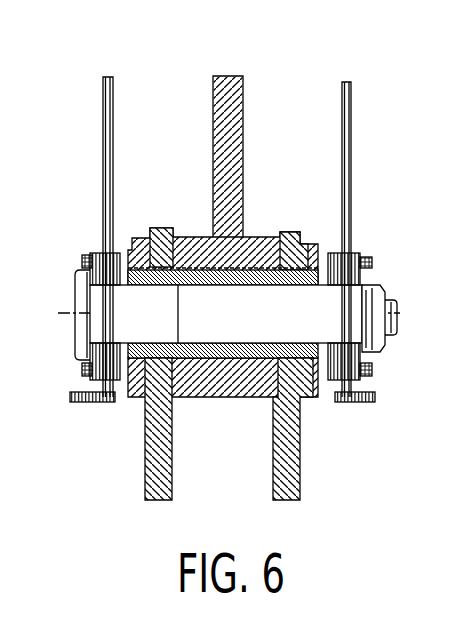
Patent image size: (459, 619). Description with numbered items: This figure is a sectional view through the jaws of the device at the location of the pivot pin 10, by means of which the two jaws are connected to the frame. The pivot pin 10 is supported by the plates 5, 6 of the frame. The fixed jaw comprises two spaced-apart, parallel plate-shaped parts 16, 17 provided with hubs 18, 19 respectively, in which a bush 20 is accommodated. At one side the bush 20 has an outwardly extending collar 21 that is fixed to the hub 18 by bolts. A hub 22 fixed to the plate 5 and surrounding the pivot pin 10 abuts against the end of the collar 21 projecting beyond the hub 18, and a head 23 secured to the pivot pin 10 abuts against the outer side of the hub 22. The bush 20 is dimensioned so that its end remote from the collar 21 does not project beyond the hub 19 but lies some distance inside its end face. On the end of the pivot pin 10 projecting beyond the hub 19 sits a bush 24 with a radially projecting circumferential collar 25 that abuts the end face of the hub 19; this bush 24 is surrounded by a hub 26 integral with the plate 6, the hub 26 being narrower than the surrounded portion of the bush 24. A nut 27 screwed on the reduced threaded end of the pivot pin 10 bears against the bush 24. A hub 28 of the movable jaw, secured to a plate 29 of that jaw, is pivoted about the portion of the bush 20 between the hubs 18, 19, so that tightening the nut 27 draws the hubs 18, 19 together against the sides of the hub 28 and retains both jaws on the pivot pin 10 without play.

The plate 5 is at (104, 121).
The plate 6 is at (352, 117).
The pivot pin 10 is at (340, 306).
The plate-shaped part 16 is at (160, 483).
The plate-shaped part 17 is at (290, 483).
The hub 18 is at (157, 228).
The hub 19 is at (297, 232).
The bush 20 is at (186, 237).
The collar 21 is at (128, 250).
The hub 22 is at (95, 256).
The head 23 is at (83, 288).
The bush 24 is at (370, 290).
The circumferential collar 25 is at (320, 373).
The hub 26 is at (362, 258).
The nut 27 is at (375, 345).
The hub 28 is at (250, 237).
The plate 29 is at (232, 90).